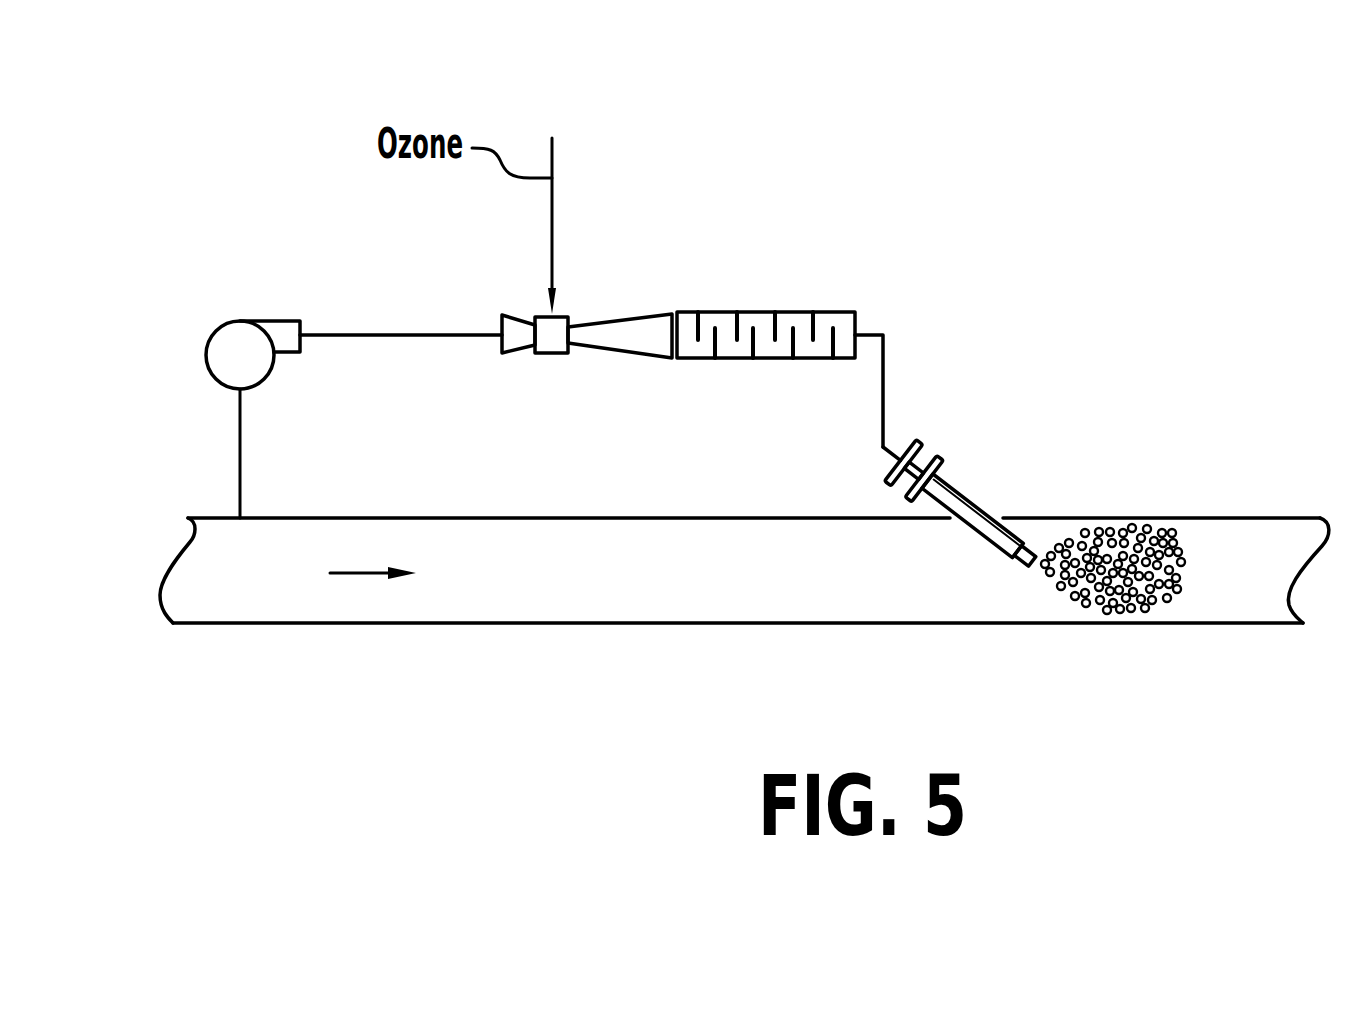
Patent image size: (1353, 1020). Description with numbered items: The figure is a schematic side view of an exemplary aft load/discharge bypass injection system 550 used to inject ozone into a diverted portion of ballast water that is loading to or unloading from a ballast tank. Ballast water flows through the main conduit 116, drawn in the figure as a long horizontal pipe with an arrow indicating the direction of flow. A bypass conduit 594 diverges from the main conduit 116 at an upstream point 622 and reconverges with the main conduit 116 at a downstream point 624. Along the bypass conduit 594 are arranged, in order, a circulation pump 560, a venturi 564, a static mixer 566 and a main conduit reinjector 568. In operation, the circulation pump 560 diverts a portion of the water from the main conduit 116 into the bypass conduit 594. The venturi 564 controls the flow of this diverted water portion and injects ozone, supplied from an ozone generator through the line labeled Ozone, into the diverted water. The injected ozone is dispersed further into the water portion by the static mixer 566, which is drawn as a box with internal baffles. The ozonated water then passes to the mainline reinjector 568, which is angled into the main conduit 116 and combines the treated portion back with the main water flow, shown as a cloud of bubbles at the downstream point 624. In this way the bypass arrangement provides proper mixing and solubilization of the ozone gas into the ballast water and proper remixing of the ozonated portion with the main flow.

The main conduit 116 is at (350, 623).
The aft load/discharge bypass injection system 550 is at (342, 221).
The circulation pump 560 is at (207, 345).
The venturi 564 is at (636, 313).
The static mixer 566 is at (795, 312).
The main conduit reinjector 568 is at (968, 488).
The bypass conduit 594 is at (375, 335).
The upstream point 622 is at (240, 518).
The downstream point 624 is at (1003, 518).